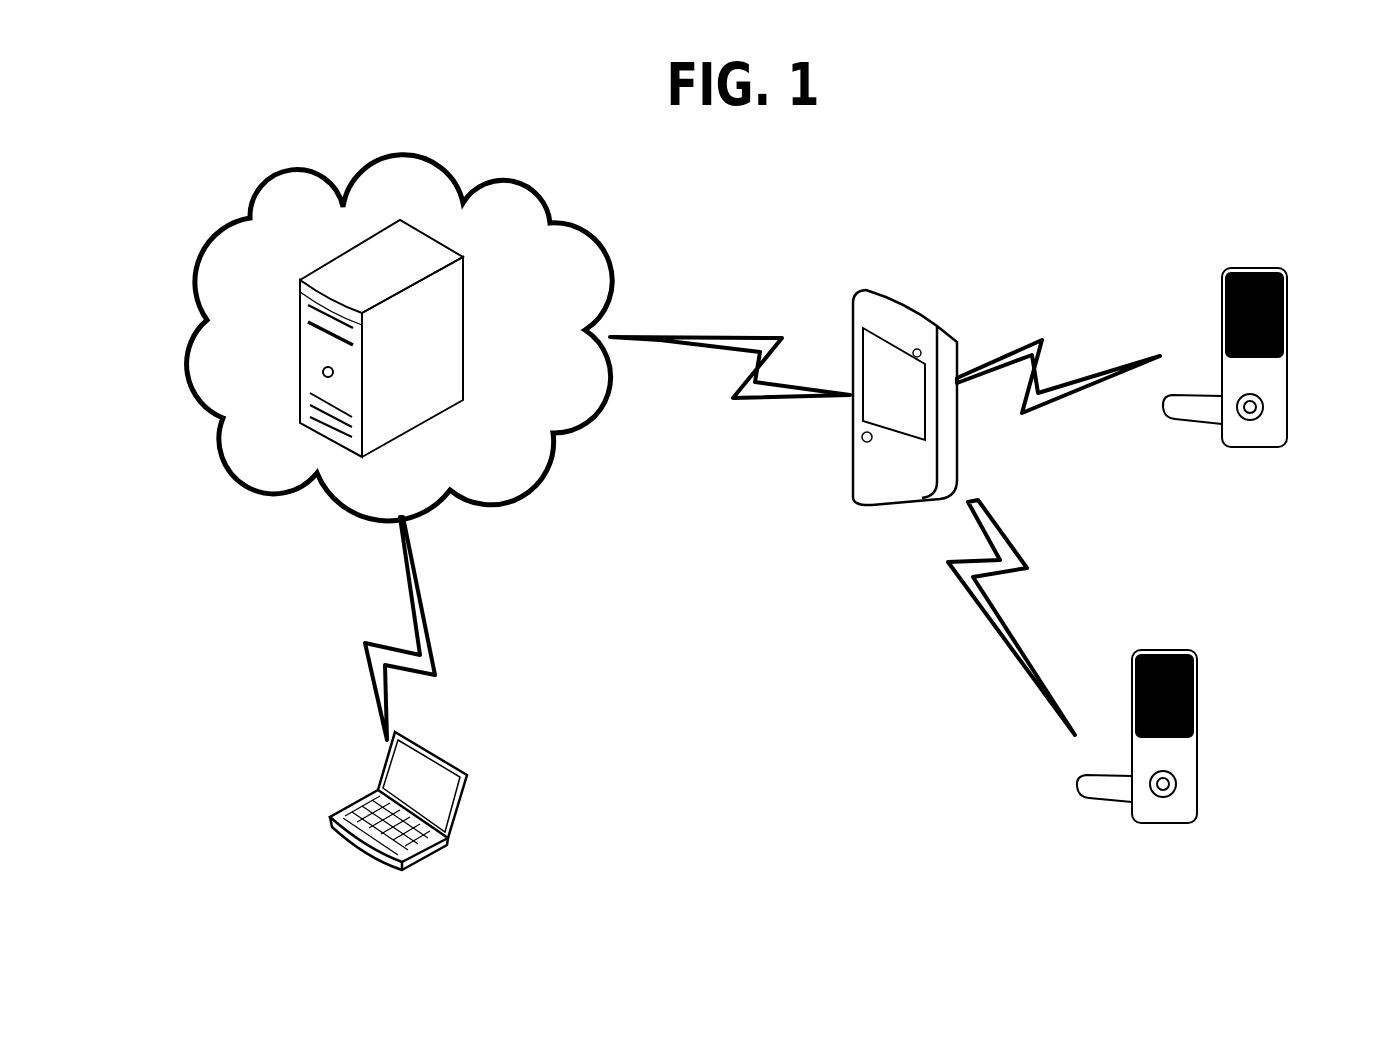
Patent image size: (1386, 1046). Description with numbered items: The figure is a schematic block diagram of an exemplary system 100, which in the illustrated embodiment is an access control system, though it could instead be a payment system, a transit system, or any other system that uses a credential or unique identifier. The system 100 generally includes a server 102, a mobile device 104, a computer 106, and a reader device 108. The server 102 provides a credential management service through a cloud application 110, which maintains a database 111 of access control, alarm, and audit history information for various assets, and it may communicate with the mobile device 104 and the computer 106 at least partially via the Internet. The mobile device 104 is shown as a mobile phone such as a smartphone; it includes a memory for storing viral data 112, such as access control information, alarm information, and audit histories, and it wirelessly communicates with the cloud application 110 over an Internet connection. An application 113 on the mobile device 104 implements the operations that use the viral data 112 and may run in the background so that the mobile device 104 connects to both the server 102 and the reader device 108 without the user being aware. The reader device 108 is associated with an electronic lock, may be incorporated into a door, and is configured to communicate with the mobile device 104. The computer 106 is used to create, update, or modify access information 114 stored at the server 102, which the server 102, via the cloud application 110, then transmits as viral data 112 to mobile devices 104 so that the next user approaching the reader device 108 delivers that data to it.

The system 100 is at (1160, 167).
The server 102 is at (369, 338).
The mobile device 104 is at (840, 397).
The computer 106 is at (485, 771).
The reader device 108 is at (1260, 465).
The cloud application 110 is at (412, 326).
The database 111 is at (419, 388).
The viral data 112 is at (885, 498).
The application 113 is at (894, 468).
The access information 114 is at (463, 628).